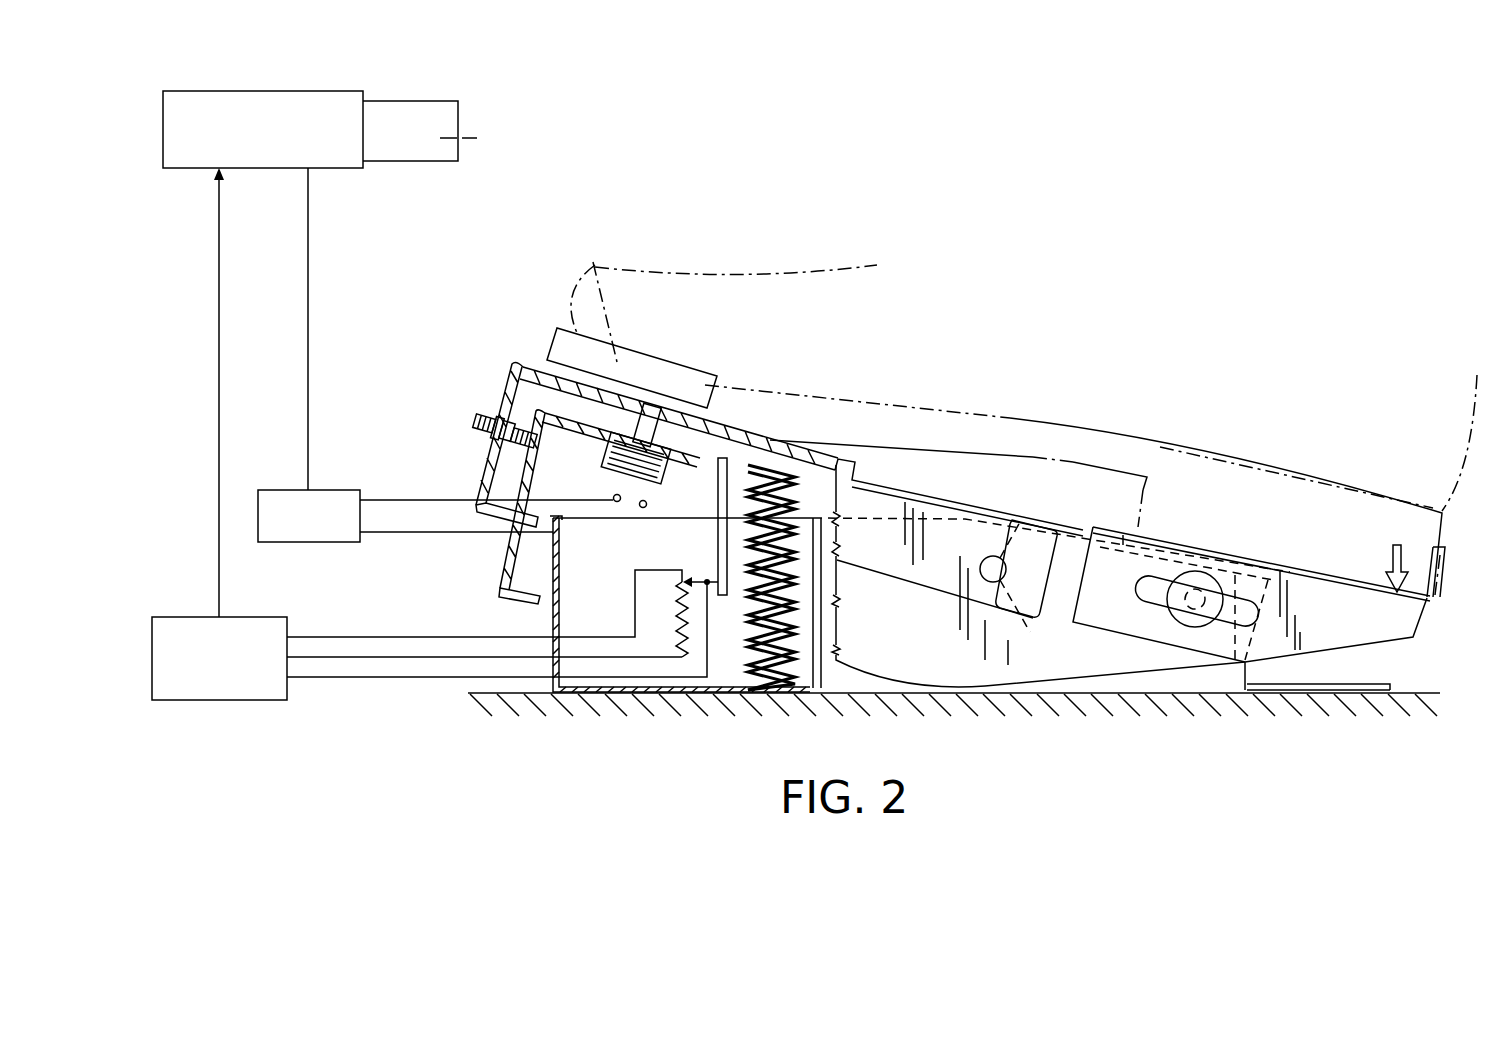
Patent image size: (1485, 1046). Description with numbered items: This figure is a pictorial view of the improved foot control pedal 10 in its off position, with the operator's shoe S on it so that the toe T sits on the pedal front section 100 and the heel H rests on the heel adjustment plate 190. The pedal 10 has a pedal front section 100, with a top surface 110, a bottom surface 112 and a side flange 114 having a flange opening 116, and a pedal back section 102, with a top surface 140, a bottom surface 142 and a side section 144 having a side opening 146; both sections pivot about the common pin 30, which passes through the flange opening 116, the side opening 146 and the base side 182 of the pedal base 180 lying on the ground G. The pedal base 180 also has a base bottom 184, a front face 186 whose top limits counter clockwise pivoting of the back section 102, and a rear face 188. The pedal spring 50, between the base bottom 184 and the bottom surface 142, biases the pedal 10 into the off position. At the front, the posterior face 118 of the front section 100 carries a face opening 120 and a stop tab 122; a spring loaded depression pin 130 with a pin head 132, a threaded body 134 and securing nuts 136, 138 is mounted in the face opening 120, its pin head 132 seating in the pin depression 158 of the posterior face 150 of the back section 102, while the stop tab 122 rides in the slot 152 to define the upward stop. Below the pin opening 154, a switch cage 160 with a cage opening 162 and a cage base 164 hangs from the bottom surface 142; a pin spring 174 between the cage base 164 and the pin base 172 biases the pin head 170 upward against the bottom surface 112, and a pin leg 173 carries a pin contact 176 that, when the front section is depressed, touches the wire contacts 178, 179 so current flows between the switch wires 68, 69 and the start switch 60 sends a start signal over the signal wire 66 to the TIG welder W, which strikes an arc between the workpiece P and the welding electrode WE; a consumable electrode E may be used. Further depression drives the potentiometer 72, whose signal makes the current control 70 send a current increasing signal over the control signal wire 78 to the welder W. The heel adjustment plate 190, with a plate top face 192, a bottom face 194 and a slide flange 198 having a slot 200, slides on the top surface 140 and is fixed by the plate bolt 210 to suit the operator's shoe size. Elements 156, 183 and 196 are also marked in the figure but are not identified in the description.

The TIG welder W is at (272, 91).
The welding electrode WE is at (458, 132).
The consumable electrode E is at (463, 131).
The workpiece P is at (471, 140).
The shoe S is at (757, 276).
The toe T is at (724, 295).
The heel H is at (1252, 497).
The ground G is at (1412, 693).
The pedal 10 is at (1000, 453).
The pin 30 is at (987, 557).
The pedal spring 50 is at (773, 672).
The start switch 60 is at (284, 490).
The signal wire 66 is at (308, 265).
The switch wire 68 is at (378, 499).
The switch wire 69 is at (382, 534).
The current control 70 is at (192, 617).
The potentiometer 72 is at (680, 630).
The control signal wire 78 is at (218, 462).
The pedal front section 100 is at (808, 442).
The pedal back section 102 is at (1088, 435).
The top surface 110 is at (843, 462).
The bottom surface 112 is at (840, 468).
The side flange 114 is at (908, 572).
The flange opening 116 is at (985, 580).
The posterior face 118 is at (525, 380).
The face opening 120 is at (505, 418).
The stop tab 122 is at (490, 513).
The depression pin 130 is at (466, 417).
The pin head 132 is at (523, 438).
The threaded body 134 is at (484, 423).
The securing nut 136 is at (498, 428).
The securing nut 138 is at (507, 431).
The top surface 140 is at (790, 438).
The bottom surface 142 is at (810, 440).
The side section 144 is at (1085, 668).
The side opening 146 is at (1017, 527).
The posterior face 150 is at (527, 582).
The slot 152 is at (516, 565).
The pin opening 154 is at (657, 440).
The slot 156 is at (1292, 598).
The pin depression 158 is at (533, 442).
The switch cage 160 is at (676, 455).
The cage opening 162 is at (640, 477).
The cage base 164 is at (608, 476).
The pin head 170 is at (650, 407).
The pin base 172 is at (628, 410).
The pin leg 173 is at (646, 506).
The pin spring 174 is at (632, 368).
The pin contact 176 is at (625, 500).
The wire contact 178 is at (615, 502).
The wire contact 179 is at (644, 508).
The pedal base 180 is at (1338, 683).
The base side 182 is at (858, 685).
The link axis 183 is at (1031, 622).
The base bottom 184 is at (1302, 694).
The front face 186 is at (551, 622).
The rear face 188 is at (1258, 690).
The heel adjustment plate 190 is at (1177, 536).
The plate top face 192 is at (1093, 527).
The bottom face 194 is at (1159, 608).
The lip 196 is at (1437, 550).
The slide flange 198 is at (1407, 618).
The slot 200 is at (1157, 603).
The plate bolt 210 is at (1193, 627).